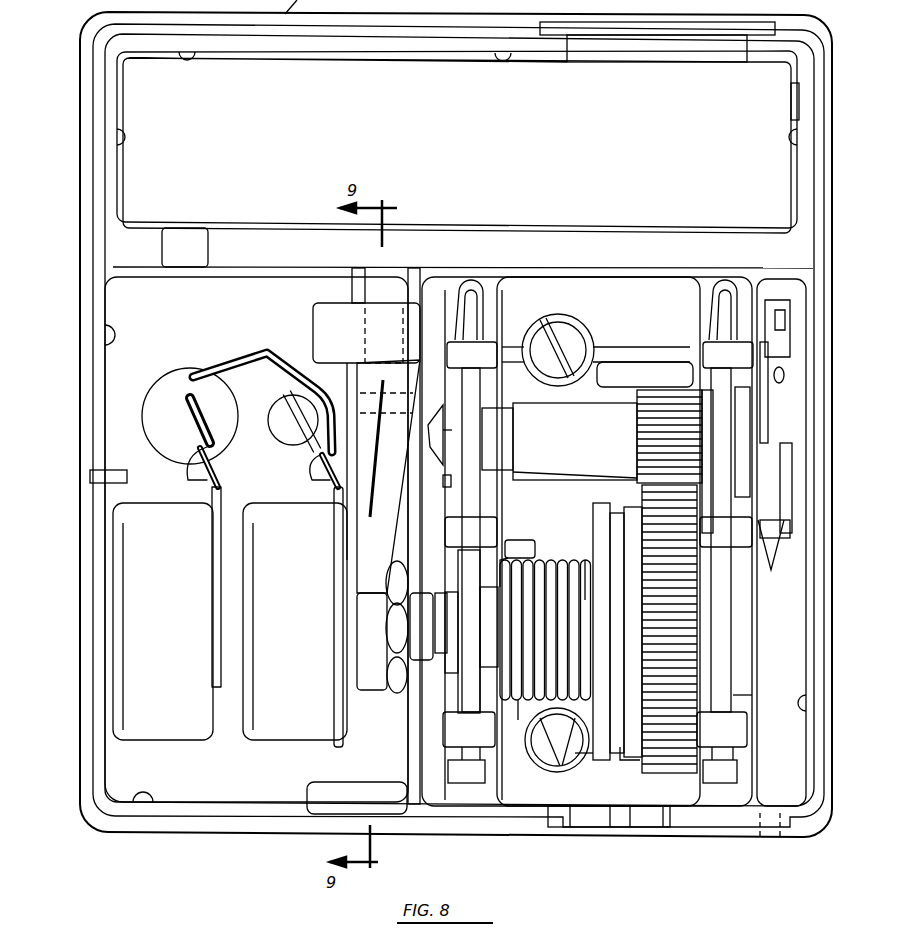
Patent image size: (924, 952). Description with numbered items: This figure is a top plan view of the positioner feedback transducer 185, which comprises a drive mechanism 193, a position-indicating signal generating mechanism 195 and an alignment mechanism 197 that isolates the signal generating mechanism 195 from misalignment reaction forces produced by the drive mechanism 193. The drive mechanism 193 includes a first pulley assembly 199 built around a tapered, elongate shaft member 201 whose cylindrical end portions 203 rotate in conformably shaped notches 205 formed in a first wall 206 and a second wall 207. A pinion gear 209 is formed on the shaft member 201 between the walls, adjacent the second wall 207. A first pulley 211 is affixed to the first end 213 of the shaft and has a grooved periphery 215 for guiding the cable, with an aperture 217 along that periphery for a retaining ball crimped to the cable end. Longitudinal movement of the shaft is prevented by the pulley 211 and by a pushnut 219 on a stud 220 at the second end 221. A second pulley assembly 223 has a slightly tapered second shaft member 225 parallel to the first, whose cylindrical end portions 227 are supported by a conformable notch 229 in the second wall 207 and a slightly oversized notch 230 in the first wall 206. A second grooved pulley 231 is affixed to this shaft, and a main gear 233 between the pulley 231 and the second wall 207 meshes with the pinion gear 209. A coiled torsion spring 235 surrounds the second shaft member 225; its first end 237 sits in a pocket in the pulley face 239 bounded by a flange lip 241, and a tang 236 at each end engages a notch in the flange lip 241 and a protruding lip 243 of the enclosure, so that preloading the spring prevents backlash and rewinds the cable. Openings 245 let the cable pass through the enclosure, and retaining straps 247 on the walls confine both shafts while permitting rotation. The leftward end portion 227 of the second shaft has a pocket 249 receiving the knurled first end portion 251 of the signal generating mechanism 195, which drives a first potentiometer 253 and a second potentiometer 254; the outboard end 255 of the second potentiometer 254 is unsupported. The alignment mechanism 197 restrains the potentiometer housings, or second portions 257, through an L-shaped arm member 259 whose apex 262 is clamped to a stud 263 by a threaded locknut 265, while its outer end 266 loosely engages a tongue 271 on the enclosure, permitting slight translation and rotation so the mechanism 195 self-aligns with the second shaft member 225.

The feedback transducer 185 is at (587, 869).
The drive mechanism 193 is at (543, 497).
The position-indicating signal generating mechanism 195 is at (247, 783).
The alignment mechanism 197 is at (357, 500).
The first pulley assembly 199 is at (613, 443).
The shaft member 201 is at (583, 403).
The cylindrical end portions 203 is at (502, 410).
The notches 205 is at (703, 392).
The first wall 206 is at (470, 290).
The second wall 207 is at (712, 294).
The pinion gear 209 is at (647, 400).
The first pulley 211 is at (767, 570).
The first end 213 is at (768, 385).
The grooved periphery 215 is at (792, 302).
The aperture 217 is at (785, 375).
The pushnut 219 is at (435, 418).
The stud 220 is at (430, 445).
The second end 221 is at (447, 485).
The second pulley assembly 223 is at (560, 745).
The second shaft member 225 is at (488, 700).
The cylindrical end portions 227 is at (455, 587).
The notch 229 is at (736, 694).
The notch 230 is at (490, 592).
The second grooved pulley 231 is at (620, 750).
The main gear 233 is at (687, 638).
The coiled torsion spring 235 is at (518, 705).
The tang 236 is at (502, 557).
The first end 237 is at (575, 560).
The pulley face 239 is at (577, 580).
The flange lip 241 is at (575, 755).
The protruding lip 243 is at (523, 547).
The openings 245 is at (618, 827).
The retaining straps 247 is at (467, 392).
The pocket 249 is at (487, 670).
The first end portion 251 is at (450, 660).
The first potentiometer 253 is at (302, 666).
The second potentiometer 254 is at (187, 610).
The outboard end 255 is at (108, 565).
The second portions 257 is at (220, 510).
The L-shaped arm member 259 is at (310, 307).
The apex 262 is at (363, 622).
The stud 263 is at (413, 610).
The threaded locknut 265 is at (393, 585).
The outer end 266 is at (320, 327).
The tongue 271 is at (352, 289).